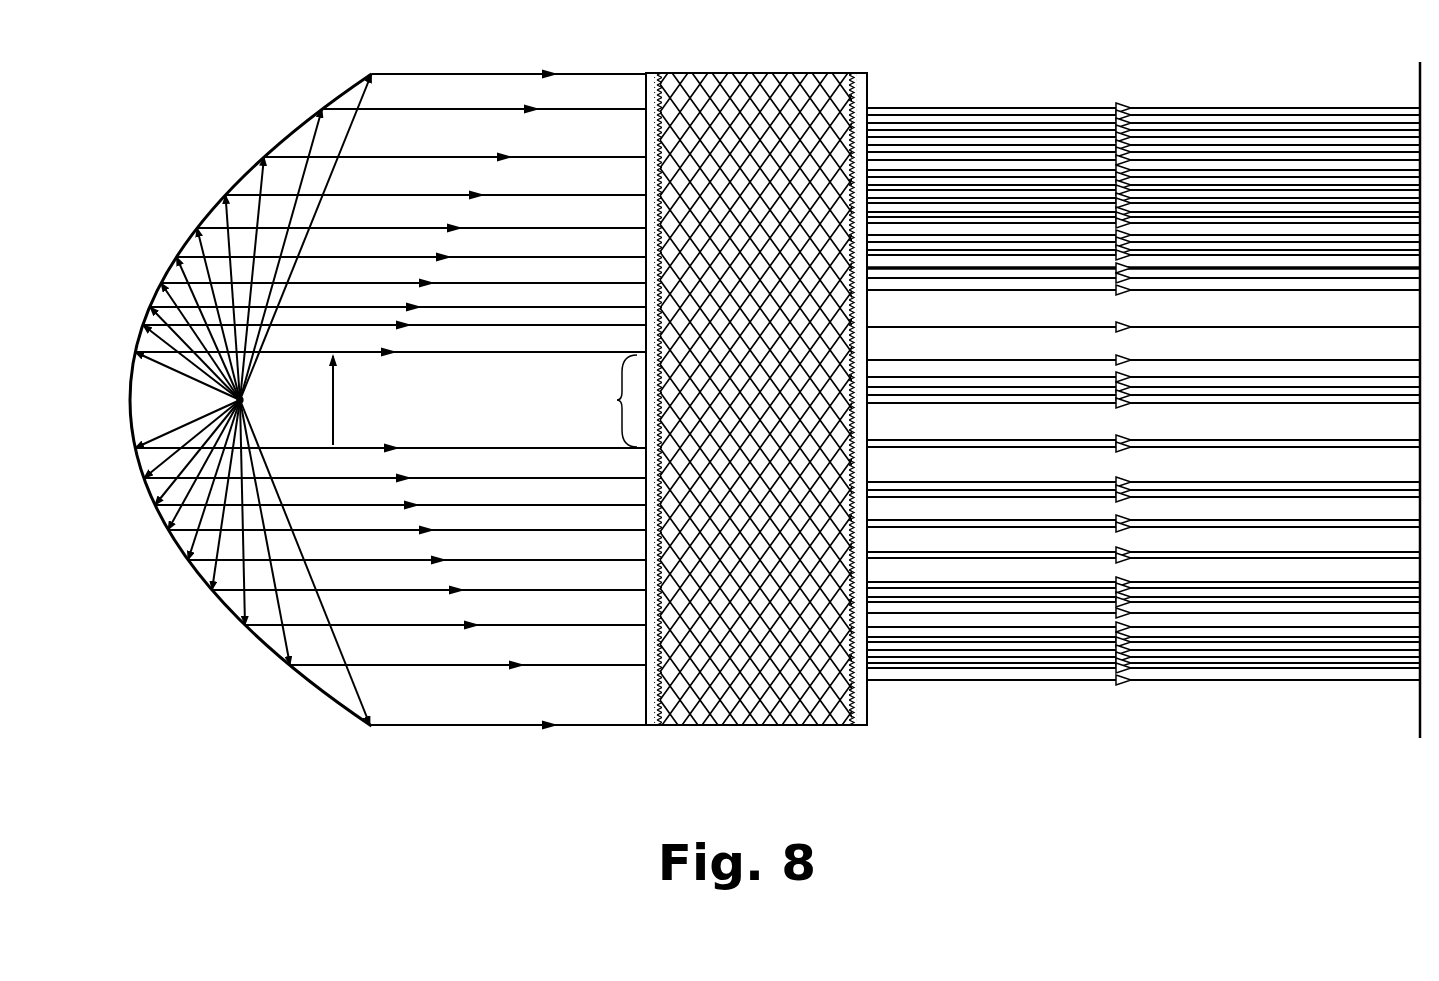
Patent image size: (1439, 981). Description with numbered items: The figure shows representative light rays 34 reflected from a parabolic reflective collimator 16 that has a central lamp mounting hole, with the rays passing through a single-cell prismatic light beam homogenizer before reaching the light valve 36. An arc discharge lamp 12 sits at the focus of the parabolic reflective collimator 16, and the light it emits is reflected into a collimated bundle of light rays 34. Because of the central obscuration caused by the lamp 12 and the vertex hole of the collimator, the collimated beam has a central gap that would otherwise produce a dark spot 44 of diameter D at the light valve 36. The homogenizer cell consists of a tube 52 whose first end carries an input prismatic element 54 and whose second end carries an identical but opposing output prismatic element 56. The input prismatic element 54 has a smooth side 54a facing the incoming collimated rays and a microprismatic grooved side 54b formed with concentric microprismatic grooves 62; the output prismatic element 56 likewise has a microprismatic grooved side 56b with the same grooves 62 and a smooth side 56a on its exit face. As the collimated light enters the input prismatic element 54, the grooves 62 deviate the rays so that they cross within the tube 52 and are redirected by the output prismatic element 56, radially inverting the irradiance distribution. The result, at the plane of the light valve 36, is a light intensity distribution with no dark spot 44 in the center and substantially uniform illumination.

The arc discharge lamp 12 is at (244, 403).
The parabolic reflective collimator 16 is at (226, 605).
The light rays 34 is at (430, 560).
The light valve 36 is at (1420, 105).
The dark spot 44 is at (606, 401).
The tube 52 is at (677, 725).
The input prismatic element 54 is at (646, 698).
The smooth side 54a is at (646, 97).
The microprismatic grooved side 54b is at (687, 88).
The output prismatic element 56 is at (867, 88).
The smooth side 56a is at (870, 697).
The microprismatic grooved side 56b is at (847, 697).
The microprismatic grooves 62 is at (1010, 522).
The diameter D is at (336, 406).